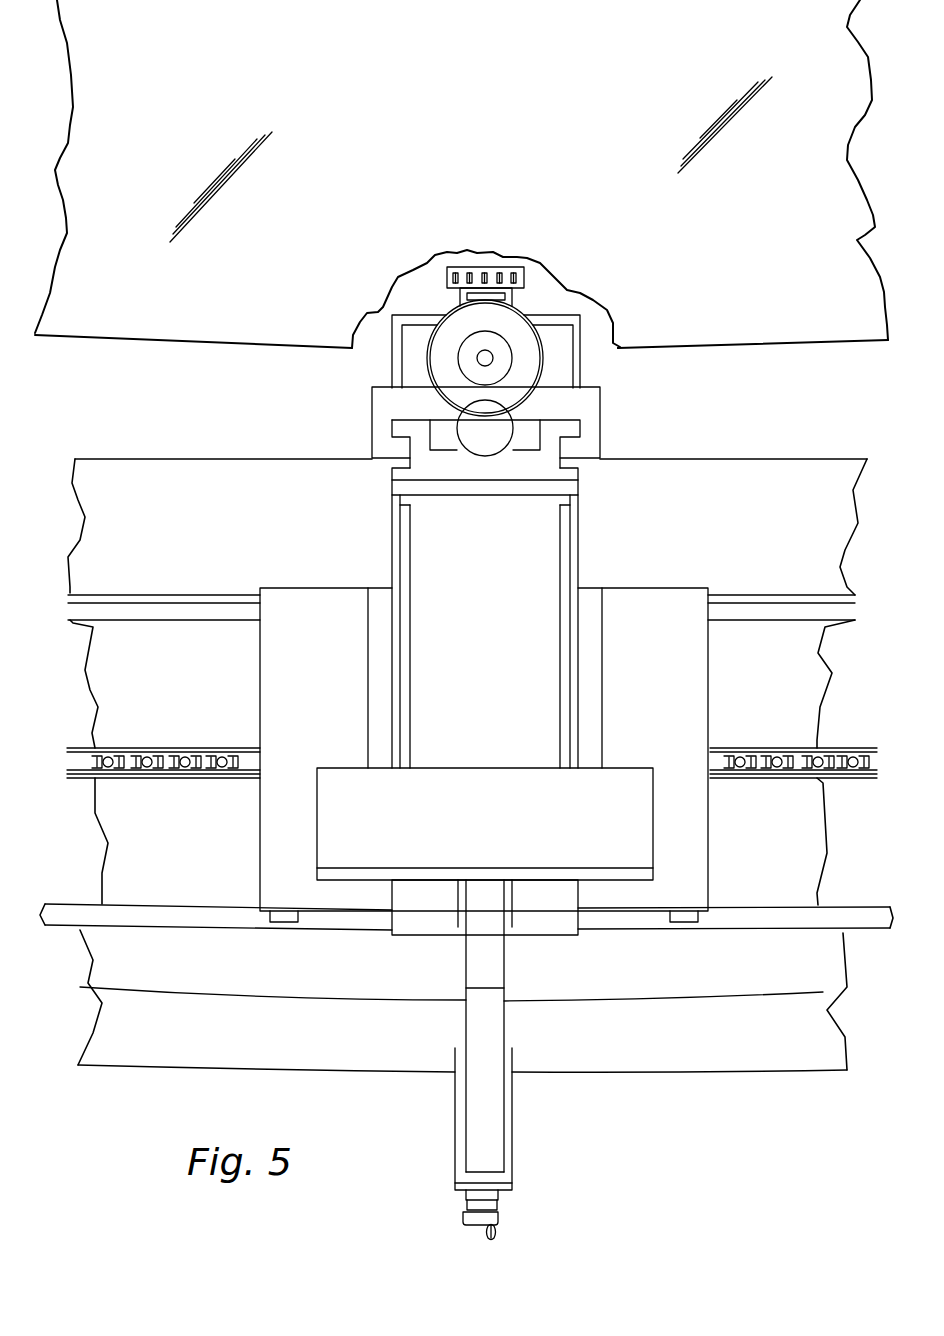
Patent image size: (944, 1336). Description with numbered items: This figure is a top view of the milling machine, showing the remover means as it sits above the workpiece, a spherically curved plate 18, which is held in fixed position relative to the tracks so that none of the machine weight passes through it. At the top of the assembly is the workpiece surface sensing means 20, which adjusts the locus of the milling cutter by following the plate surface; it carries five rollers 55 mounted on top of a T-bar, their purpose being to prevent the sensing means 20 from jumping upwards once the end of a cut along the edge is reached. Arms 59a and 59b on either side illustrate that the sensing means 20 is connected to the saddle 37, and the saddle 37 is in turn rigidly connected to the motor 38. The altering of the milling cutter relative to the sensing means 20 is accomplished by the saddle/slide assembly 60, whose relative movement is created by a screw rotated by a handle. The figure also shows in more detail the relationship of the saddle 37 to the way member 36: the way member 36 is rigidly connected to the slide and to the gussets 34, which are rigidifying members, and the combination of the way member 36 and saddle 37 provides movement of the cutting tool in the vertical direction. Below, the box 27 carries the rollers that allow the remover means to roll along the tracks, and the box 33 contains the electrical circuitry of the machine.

The spherically curved plate 18 is at (457, 207).
The workpiece surface sensing means 20 is at (457, 267).
The rollers 55 is at (517, 268).
The saddle/slide assembly 60 is at (458, 298).
The motor 38 is at (518, 323).
The arm 59a is at (395, 360).
The arm 59b is at (578, 363).
The saddle 37 is at (588, 400).
The way member 36 is at (573, 473).
The gussets 34 is at (400, 529).
The box 27 is at (319, 677).
The box 33 is at (500, 827).